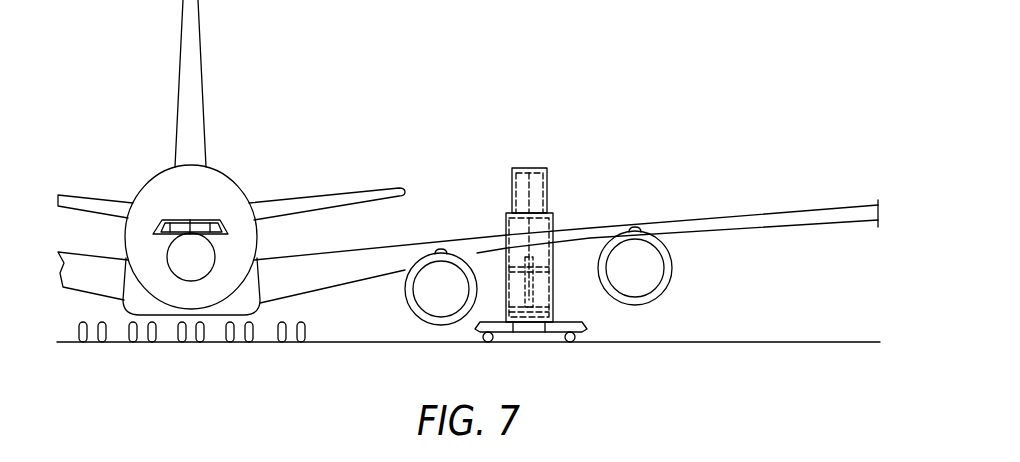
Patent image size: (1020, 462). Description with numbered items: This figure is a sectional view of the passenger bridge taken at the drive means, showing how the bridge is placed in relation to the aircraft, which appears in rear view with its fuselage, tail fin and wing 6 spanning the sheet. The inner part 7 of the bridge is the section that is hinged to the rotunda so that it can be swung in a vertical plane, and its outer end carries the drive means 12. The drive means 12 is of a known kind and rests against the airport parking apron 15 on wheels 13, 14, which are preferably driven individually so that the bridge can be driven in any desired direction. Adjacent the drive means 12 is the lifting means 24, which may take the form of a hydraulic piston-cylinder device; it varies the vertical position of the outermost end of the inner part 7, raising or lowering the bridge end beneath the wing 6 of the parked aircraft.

The aircraft wing 6 is at (685, 227).
The inner part 7 is at (533, 190).
The drive means 12 is at (530, 327).
The wheel 13 is at (486, 341).
The wheel 14 is at (572, 341).
The airport parking apron 15 is at (729, 341).
The lifting means 24 is at (542, 293).